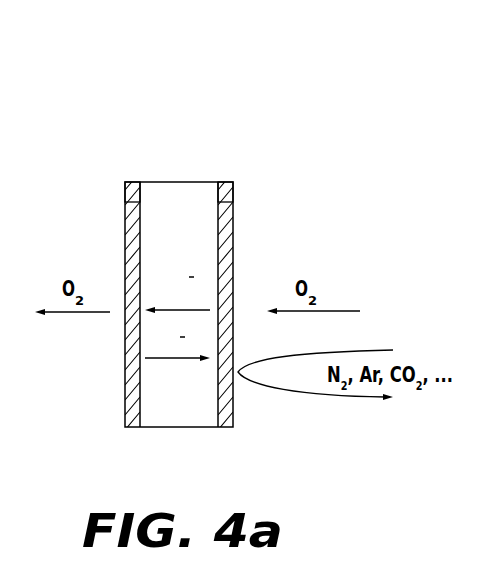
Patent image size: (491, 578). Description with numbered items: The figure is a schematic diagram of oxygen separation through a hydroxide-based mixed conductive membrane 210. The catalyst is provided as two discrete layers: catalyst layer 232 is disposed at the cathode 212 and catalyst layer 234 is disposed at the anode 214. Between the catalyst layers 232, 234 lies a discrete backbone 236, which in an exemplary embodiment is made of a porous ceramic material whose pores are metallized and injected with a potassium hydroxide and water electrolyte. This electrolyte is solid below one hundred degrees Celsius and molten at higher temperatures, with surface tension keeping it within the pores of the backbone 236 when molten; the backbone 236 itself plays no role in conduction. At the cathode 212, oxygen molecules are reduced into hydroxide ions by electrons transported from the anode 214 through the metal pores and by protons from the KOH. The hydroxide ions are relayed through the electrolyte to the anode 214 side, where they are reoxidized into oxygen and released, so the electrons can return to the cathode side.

The hydroxide-based mixed conductive membrane 210 is at (178, 143).
The cathode 212 is at (221, 200).
The anode 214 is at (138, 200).
The catalyst layer 232 is at (226, 247).
The catalyst layer 234 is at (132, 247).
The backbone 236 is at (205, 408).